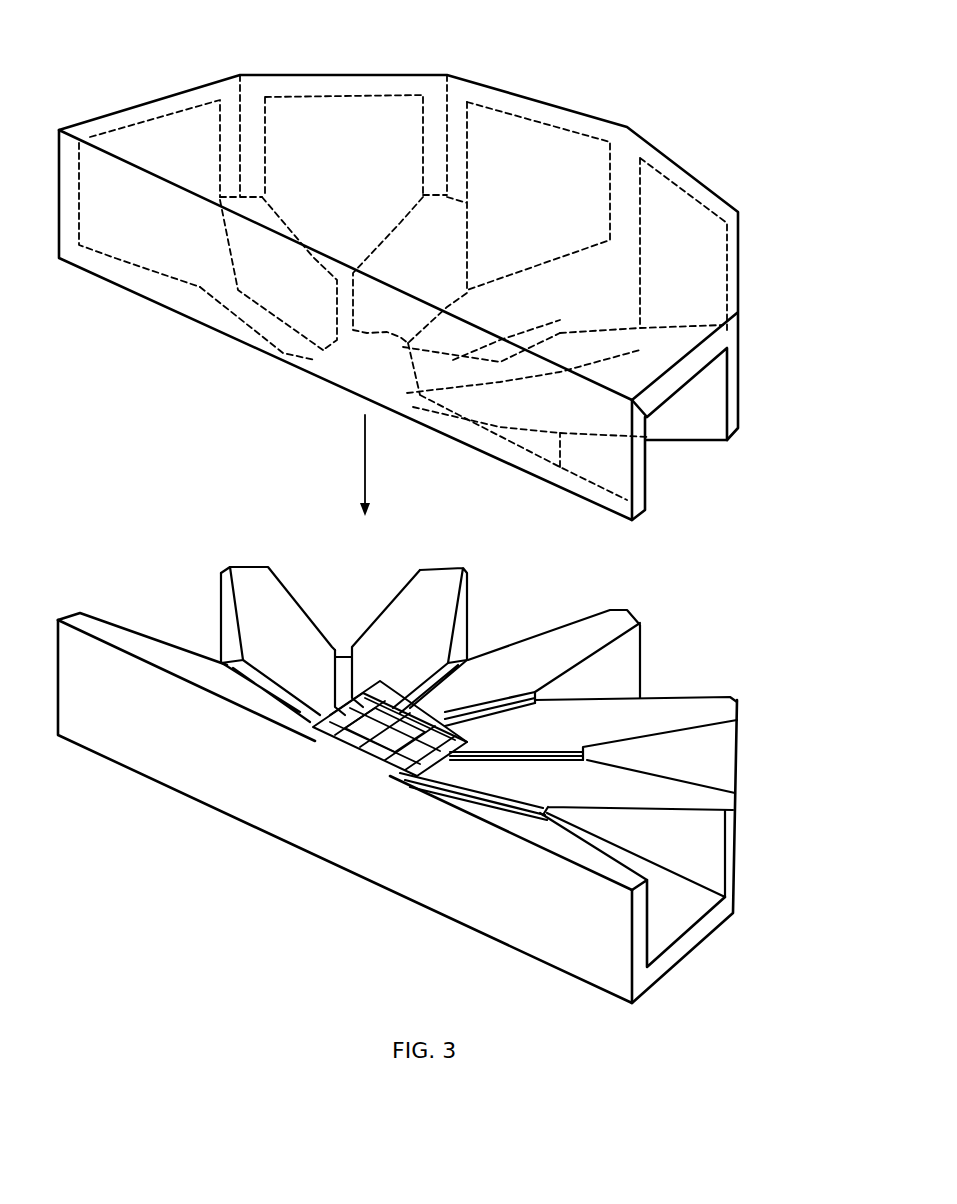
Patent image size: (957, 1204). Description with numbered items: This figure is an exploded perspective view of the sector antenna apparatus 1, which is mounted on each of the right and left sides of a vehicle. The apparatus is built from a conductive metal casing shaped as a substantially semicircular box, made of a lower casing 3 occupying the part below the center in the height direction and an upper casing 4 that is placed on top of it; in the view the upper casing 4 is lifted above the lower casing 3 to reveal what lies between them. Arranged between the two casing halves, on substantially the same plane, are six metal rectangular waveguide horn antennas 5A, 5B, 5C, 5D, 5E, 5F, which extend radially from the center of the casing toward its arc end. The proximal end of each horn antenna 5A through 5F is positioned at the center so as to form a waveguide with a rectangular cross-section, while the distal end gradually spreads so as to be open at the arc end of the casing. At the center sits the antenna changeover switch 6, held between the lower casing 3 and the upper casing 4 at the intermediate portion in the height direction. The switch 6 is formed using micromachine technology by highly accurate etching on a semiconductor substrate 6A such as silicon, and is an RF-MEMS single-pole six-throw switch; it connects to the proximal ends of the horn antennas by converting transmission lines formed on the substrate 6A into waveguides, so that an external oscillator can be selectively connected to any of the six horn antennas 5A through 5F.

The sector antenna apparatus 1 is at (126, 100).
The lower casing 3 is at (158, 768).
The upper casing 4 is at (311, 88).
The horn antenna 5A is at (223, 620).
The horn antenna 5B is at (402, 587).
The horn antenna 5C is at (578, 618).
The horn antenna 5D is at (703, 695).
The horn antenna 5E is at (723, 760).
The horn antenna 5F is at (678, 912).
The antenna changeover switch 6 is at (310, 743).
The semiconductor substrate 6A is at (367, 765).